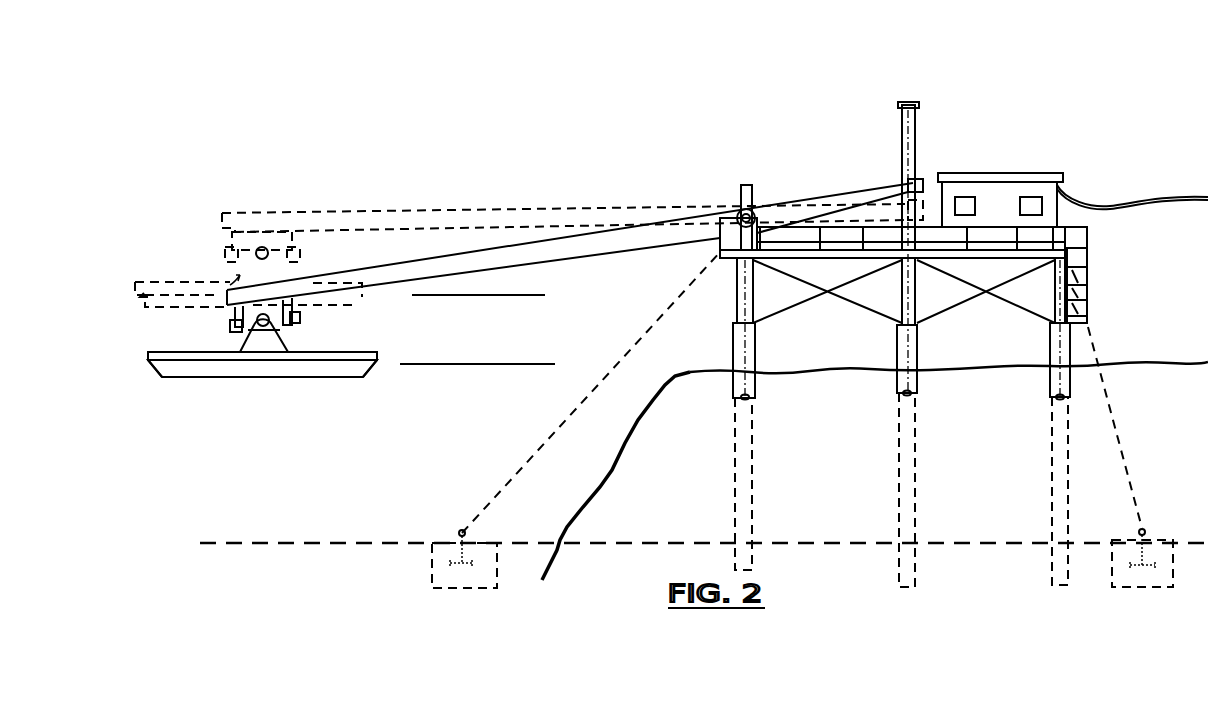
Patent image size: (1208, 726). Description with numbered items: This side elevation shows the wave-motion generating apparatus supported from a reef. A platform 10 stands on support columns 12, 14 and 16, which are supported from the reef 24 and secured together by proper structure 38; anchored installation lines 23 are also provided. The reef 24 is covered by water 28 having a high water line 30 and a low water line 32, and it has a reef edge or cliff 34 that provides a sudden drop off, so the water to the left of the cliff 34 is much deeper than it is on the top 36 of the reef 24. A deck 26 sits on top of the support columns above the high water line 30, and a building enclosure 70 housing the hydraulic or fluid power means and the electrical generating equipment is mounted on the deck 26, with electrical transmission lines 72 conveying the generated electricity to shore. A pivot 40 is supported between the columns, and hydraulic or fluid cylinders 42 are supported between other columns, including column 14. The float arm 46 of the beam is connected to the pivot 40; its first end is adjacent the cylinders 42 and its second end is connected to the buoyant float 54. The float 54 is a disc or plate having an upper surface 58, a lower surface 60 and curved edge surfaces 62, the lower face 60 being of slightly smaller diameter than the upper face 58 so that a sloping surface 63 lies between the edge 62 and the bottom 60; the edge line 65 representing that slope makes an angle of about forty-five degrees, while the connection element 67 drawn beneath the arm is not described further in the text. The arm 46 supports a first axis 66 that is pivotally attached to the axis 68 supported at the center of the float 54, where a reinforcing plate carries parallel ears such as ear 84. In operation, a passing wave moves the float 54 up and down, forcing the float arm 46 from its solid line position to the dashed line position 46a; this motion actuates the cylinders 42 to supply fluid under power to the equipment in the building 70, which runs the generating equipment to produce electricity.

The platform 10 is at (1073, 340).
The column 12 is at (1050, 378).
The column 14 is at (918, 383).
The column 16 is at (753, 395).
The anchored installation lines 23 is at (557, 428).
The reef 24 is at (909, 510).
The deck 26 is at (725, 260).
The water 28 is at (280, 485).
The high water line 30 is at (493, 298).
The low water line 32 is at (495, 364).
The cliff 34 is at (597, 487).
The top of the reef 36 is at (827, 370).
The structure 38 is at (837, 260).
The pivot 40 is at (740, 205).
The hydraulic or fluid cylinders 42 is at (900, 140).
The float arm 46 is at (473, 262).
The dashed line position of float arm 46a is at (362, 212).
The float 54 is at (355, 307).
The upper surface 58 is at (187, 352).
The lower surface 60 is at (212, 377).
The edge surface 62 is at (150, 365).
The sloping surface 63 is at (197, 370).
The edge line 65 is at (373, 370).
The first axis 66 is at (310, 317).
The pedestal bracket 67 is at (273, 333).
The axis 68 is at (263, 327).
The building enclosure 70 is at (988, 173).
The electrical transmission lines 72 is at (1114, 200).
The ear 84 is at (290, 334).